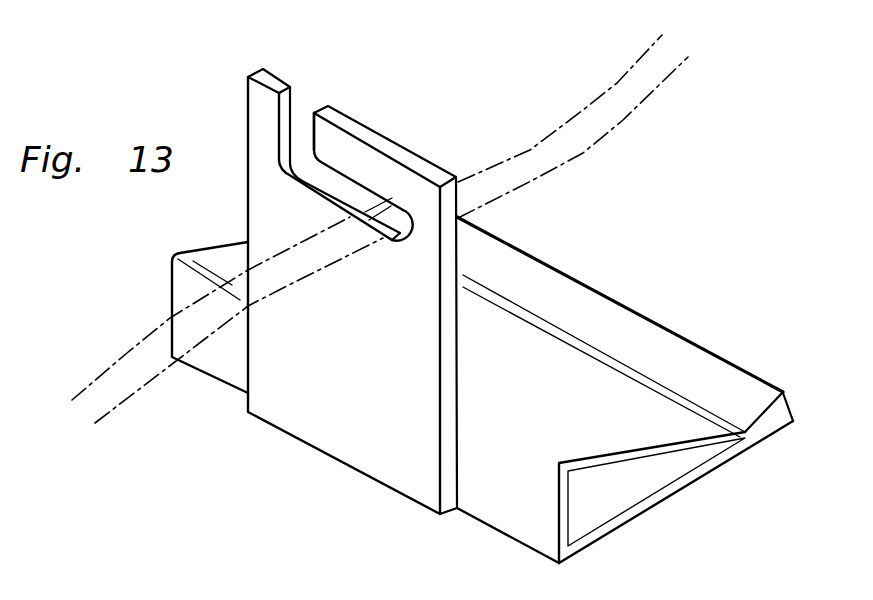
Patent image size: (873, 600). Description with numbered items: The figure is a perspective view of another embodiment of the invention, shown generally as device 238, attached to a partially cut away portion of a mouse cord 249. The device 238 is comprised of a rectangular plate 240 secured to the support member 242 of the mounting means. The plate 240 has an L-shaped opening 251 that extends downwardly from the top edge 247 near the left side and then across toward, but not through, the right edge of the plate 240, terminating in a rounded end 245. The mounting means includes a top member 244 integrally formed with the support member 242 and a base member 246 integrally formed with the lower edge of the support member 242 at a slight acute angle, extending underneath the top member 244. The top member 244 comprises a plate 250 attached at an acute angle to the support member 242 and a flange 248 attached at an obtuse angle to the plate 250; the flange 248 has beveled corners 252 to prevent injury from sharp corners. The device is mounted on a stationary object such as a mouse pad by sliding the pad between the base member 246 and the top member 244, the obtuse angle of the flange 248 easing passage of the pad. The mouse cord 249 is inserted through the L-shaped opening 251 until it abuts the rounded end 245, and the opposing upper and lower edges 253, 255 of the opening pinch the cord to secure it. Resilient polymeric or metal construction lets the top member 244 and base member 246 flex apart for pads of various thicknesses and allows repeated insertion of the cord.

The device 238 is at (230, 60).
The rectangular plate 240 is at (308, 427).
The support member 242 is at (522, 515).
The top member 244 is at (578, 417).
The rounded end 245 is at (400, 240).
The base member 246 is at (673, 488).
The top edge 247 is at (380, 140).
The flange 248 is at (664, 340).
The mouse cord 249 is at (130, 358).
The plate 250 is at (542, 357).
The L-shaped opening 251 is at (303, 113).
The beveled corners 252 is at (783, 392).
The upper edge 253 is at (368, 188).
The lower edge 255 is at (303, 186).